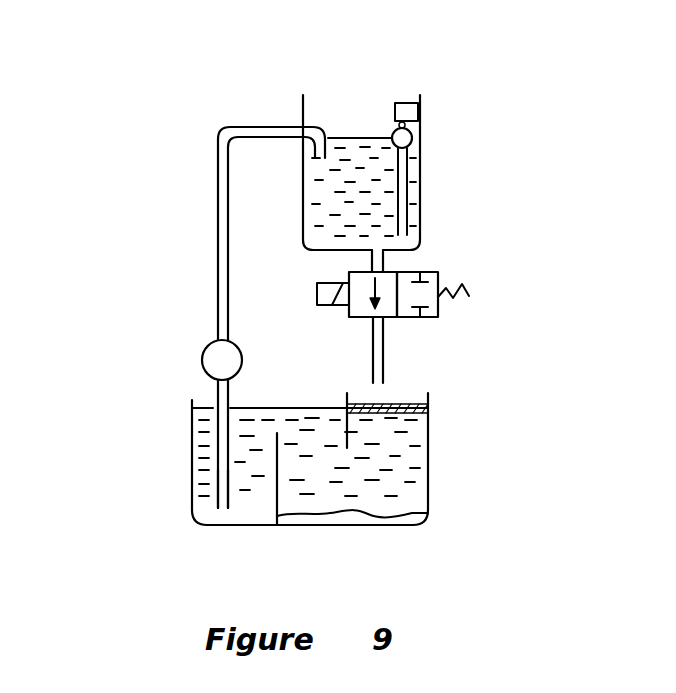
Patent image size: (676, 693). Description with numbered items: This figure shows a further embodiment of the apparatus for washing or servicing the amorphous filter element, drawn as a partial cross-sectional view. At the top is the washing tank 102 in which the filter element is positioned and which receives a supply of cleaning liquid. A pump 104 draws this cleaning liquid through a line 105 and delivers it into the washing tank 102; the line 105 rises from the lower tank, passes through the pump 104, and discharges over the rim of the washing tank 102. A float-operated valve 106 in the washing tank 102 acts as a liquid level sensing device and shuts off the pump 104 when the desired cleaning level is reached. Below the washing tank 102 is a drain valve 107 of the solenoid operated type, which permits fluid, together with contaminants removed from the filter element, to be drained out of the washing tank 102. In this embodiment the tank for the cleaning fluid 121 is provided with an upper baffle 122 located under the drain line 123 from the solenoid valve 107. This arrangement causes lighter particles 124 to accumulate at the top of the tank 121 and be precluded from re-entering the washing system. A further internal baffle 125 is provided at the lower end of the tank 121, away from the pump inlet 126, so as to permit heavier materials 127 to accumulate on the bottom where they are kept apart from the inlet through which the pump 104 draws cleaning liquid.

The washing tank 102 is at (420, 202).
The pump 104 is at (202, 360).
The line 105 is at (218, 275).
The float-operated valve 106 is at (392, 130).
The drain valve 107 is at (428, 317).
The tank for the cleaning fluid 121 is at (428, 462).
The upper baffle 122 is at (347, 400).
The drain line 123 is at (383, 367).
The lighter particles 124 is at (428, 410).
The internal baffle 125 is at (277, 503).
The pump inlet 126 is at (218, 466).
The heavier materials 127 is at (360, 515).